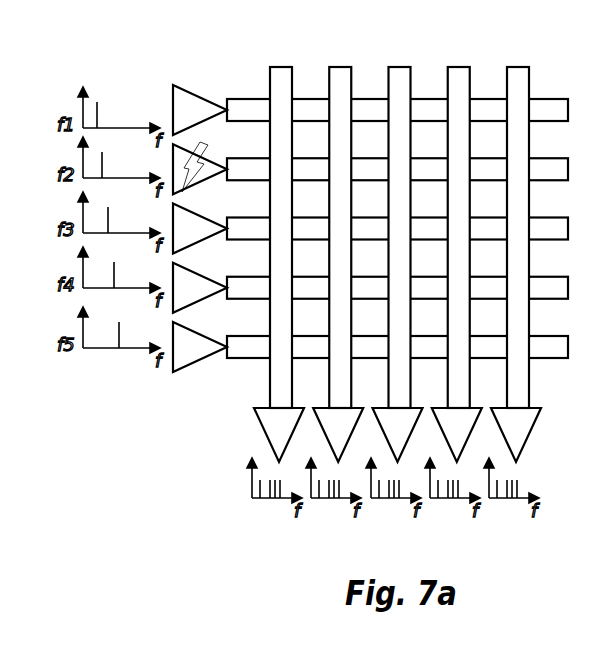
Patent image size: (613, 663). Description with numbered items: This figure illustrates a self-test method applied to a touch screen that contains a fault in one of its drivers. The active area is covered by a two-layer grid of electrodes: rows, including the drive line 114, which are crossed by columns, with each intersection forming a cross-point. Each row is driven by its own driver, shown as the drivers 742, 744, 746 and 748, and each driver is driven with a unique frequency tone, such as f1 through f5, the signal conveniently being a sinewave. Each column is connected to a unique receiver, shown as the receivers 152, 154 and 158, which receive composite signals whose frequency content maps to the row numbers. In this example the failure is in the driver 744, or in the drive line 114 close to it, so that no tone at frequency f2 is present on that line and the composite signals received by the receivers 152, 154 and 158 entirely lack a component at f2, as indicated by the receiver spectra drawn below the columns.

The drive line 114 is at (570, 170).
The receiver 152 is at (263, 428).
The receiver 154 is at (323, 415).
The receiver 158 is at (532, 430).
The driver 742 is at (173, 85).
The driver 744 is at (173, 163).
The driver 746 is at (173, 308).
The driver 748 is at (192, 363).